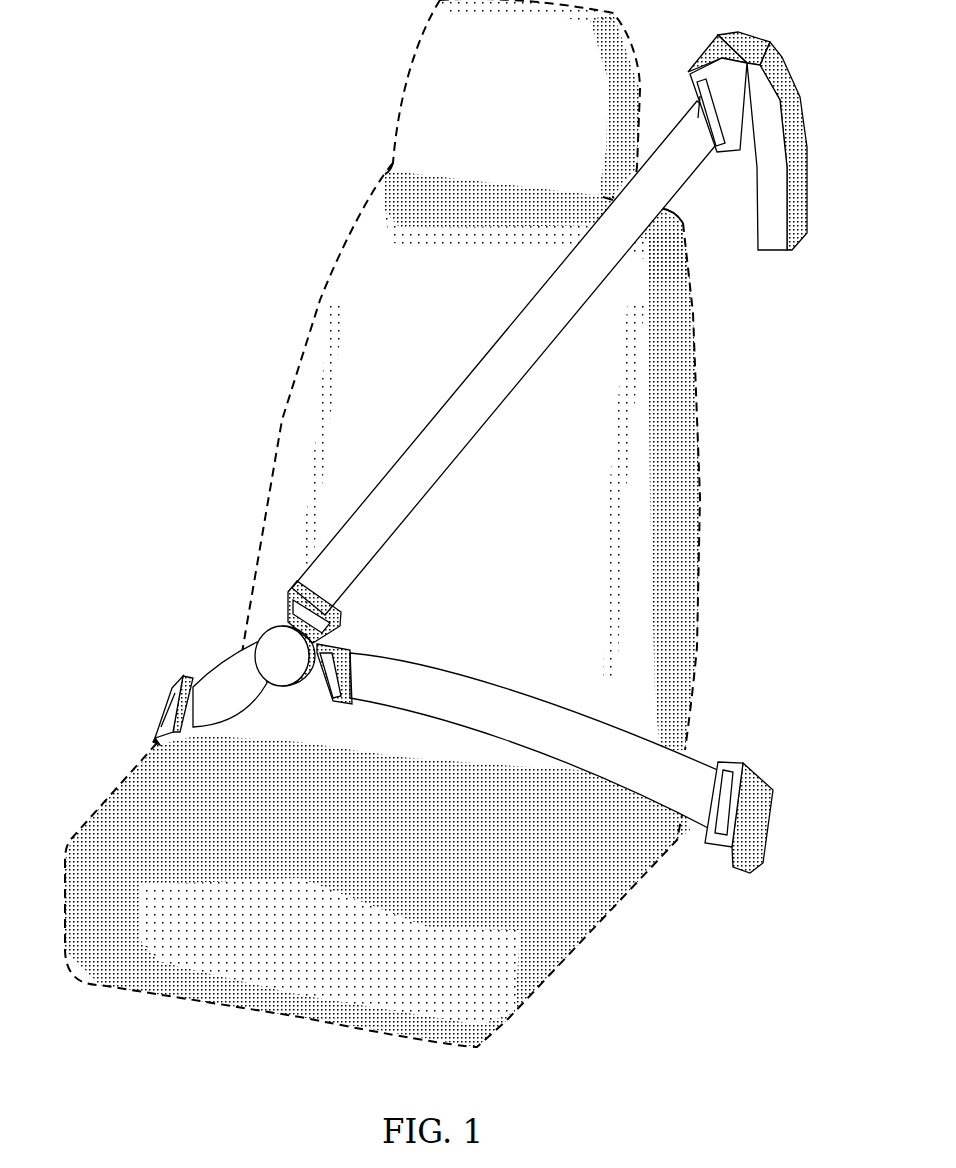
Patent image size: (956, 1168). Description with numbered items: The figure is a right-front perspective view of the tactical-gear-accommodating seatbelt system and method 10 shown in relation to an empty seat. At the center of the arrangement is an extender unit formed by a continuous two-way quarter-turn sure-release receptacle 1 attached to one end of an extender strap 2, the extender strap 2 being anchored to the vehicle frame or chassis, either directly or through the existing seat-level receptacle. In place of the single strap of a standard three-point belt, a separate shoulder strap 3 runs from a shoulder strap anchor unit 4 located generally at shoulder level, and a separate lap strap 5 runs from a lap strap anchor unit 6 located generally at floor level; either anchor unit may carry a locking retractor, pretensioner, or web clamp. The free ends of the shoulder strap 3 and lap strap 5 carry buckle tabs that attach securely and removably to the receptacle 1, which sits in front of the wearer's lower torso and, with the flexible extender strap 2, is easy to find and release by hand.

The tactical-gear-accommodating seatbelt system and method 10 is at (134, 186).
The continuous two-way quarter-turn sure-release receptacle 1 is at (273, 650).
The extender strap 2 is at (223, 678).
The shoulder strap 3 is at (500, 367).
The shoulder strap anchor unit 4 is at (700, 60).
The lap strap 5 is at (502, 705).
The lap strap anchor unit 6 is at (758, 783).